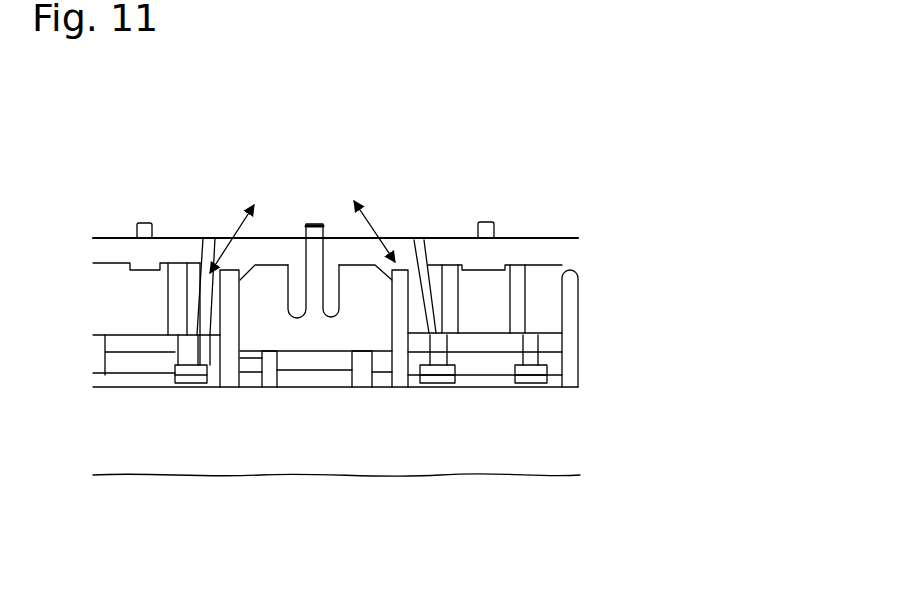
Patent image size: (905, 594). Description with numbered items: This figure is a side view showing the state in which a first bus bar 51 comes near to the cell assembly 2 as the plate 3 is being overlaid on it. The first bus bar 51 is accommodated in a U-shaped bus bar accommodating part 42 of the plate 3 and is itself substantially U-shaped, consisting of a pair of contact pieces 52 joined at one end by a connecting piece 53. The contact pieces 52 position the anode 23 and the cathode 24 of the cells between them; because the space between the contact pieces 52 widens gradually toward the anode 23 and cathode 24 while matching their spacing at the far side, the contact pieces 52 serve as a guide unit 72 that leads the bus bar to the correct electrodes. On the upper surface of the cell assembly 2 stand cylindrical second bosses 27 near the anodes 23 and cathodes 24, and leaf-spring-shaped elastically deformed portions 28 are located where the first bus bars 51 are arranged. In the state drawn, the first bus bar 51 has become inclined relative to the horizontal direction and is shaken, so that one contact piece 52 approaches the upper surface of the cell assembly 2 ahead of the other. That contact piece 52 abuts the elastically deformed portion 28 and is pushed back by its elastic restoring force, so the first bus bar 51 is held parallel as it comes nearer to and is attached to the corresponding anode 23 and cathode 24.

The cell assembly 2 is at (582, 422).
The plate 3 is at (110, 229).
The anode 23 is at (232, 387).
The cathode 24 is at (397, 387).
The second boss 27 is at (268, 387).
The elastically deformed portion 28 is at (192, 387).
The bus bar accommodating part 42 is at (178, 278).
The first bus bar 51 is at (338, 253).
The contact piece 52 is at (349, 261).
The connecting piece 53 is at (272, 248).
The guide unit 72 is at (208, 272).